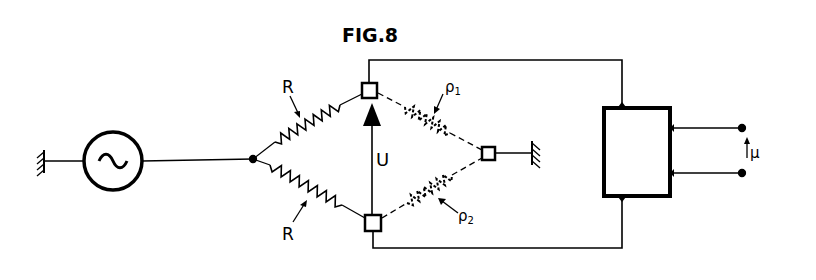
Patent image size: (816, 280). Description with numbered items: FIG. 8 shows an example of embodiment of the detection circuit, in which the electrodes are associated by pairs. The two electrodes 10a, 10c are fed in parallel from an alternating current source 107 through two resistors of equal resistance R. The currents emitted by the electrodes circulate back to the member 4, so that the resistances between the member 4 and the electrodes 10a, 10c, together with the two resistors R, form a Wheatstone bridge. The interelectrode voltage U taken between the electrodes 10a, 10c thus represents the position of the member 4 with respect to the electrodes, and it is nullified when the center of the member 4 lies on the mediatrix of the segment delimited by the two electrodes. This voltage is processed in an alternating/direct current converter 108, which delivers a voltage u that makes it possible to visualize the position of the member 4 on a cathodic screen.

The alternating current source 107 is at (134, 178).
The electrode 10a is at (363, 85).
The electrode 10c is at (366, 228).
The member 4 is at (492, 147).
The alternating/direct current converter 108 is at (668, 103).